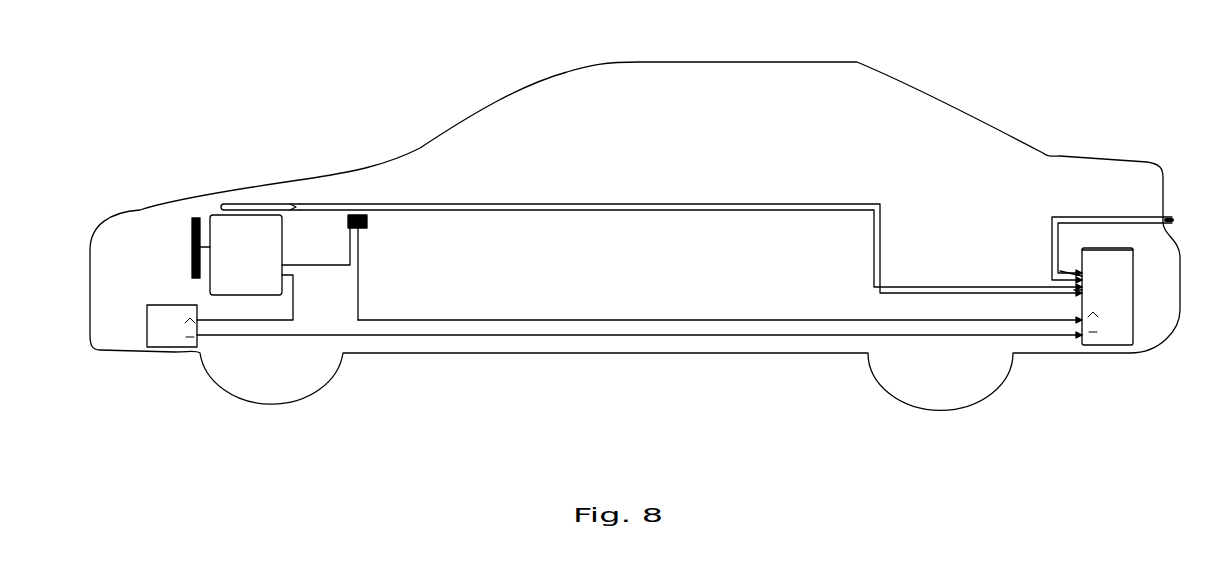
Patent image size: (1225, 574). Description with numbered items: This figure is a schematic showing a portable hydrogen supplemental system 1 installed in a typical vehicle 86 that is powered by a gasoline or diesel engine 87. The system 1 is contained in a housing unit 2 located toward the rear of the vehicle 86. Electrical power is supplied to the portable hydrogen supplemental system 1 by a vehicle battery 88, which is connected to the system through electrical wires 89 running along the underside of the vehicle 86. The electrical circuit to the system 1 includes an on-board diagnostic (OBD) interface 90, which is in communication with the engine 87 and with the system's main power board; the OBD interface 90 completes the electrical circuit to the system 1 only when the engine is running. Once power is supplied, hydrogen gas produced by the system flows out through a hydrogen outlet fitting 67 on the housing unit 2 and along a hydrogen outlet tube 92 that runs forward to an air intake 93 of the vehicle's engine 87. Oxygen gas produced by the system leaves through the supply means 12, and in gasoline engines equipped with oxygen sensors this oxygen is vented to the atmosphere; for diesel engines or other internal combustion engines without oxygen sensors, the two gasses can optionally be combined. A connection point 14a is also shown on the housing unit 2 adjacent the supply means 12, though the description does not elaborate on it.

The vehicle 86 is at (578, 73).
The engine 87 is at (227, 238).
The air intake 93 is at (250, 207).
The hydrogen outlet tube 92 is at (583, 210).
The on-board diagnostic (OBD) interface 90 is at (370, 220).
The vehicle battery 88 is at (190, 352).
The electrical wires 89 is at (423, 322).
The supply means 12 is at (1105, 215).
The coolant connection 14a is at (1077, 275).
The portable hydrogen supplemental system 1 is at (1120, 305).
The housing unit 2 is at (1118, 273).
The hydrogen outlet fitting 67 is at (1077, 295).